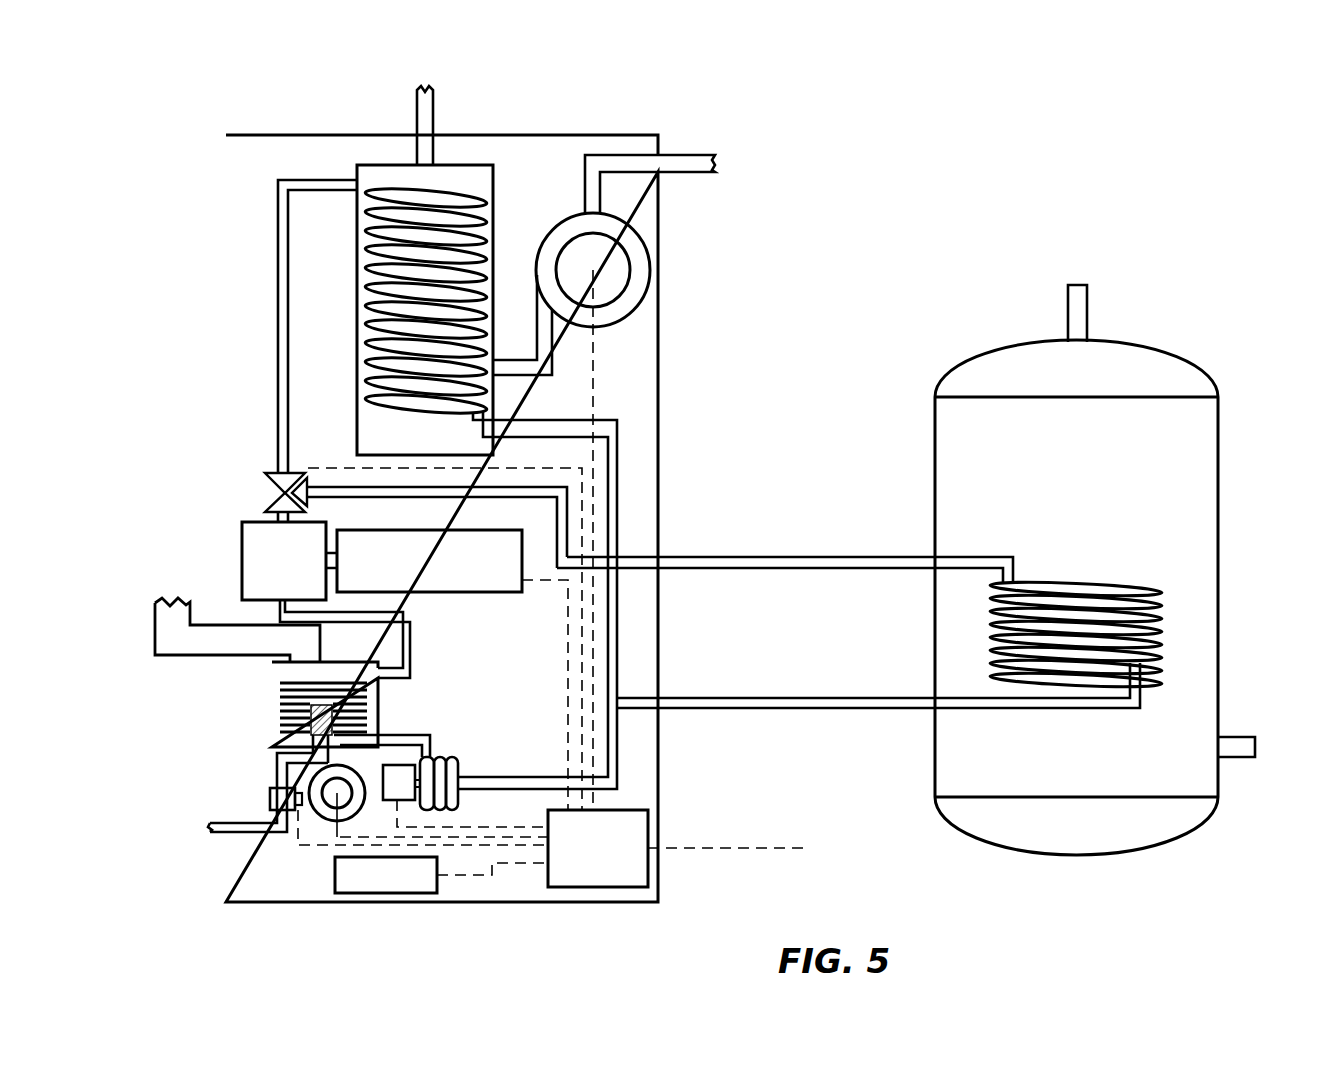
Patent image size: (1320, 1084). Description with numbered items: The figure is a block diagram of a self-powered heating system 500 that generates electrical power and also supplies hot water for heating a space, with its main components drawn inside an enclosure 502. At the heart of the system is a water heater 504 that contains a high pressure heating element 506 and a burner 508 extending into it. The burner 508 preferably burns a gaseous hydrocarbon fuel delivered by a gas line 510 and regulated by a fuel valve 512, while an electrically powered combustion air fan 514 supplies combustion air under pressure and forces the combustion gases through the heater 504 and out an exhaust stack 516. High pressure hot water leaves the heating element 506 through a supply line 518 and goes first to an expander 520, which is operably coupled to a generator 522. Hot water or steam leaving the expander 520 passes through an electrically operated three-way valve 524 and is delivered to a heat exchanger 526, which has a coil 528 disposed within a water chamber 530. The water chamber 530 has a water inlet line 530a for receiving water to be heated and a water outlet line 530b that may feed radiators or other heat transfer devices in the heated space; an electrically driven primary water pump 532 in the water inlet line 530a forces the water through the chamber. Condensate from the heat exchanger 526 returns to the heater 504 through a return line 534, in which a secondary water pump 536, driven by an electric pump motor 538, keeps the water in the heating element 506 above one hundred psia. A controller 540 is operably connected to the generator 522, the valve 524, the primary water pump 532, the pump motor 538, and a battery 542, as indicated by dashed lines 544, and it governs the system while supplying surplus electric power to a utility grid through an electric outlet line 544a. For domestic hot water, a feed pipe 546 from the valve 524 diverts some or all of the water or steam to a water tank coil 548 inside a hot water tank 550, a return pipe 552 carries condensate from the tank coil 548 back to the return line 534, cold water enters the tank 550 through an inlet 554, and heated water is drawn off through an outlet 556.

The heating system 500 is at (850, 136).
The housing 502 is at (658, 394).
The water heater 504 is at (272, 736).
The high pressure heating element 506 is at (367, 697).
The burner 508 is at (330, 750).
The gas line 510 is at (212, 822).
The fuel valve 512 is at (270, 797).
The combustion air fan 514 is at (331, 820).
The exhaust stack 516 is at (205, 657).
The supply line 518 is at (412, 635).
The expander 520 is at (242, 548).
The generator 522 is at (428, 592).
The three-way valve 524 is at (265, 490).
The heat exchanger 526 is at (350, 168).
The coil 528 is at (495, 190).
The water chamber 530 is at (357, 428).
The water inlet line 530a is at (677, 153).
The water outlet line 530b is at (433, 96).
The primary water pump 532 is at (650, 256).
The return line 534 is at (619, 490).
The secondary water pump 536 is at (458, 766).
The pump motor 538 is at (418, 752).
The controller 540 is at (652, 826).
The battery 542 is at (340, 895).
The dashed lines 544 is at (598, 803).
The electric outlet line 544a is at (748, 850).
The feed pipe 546 is at (760, 557).
The water tank coil 548 is at (1060, 582).
The hot water tank 550 is at (1219, 478).
The return pipe 552 is at (744, 709).
The inlet 554 is at (1240, 737).
The outlet 556 is at (1090, 306).